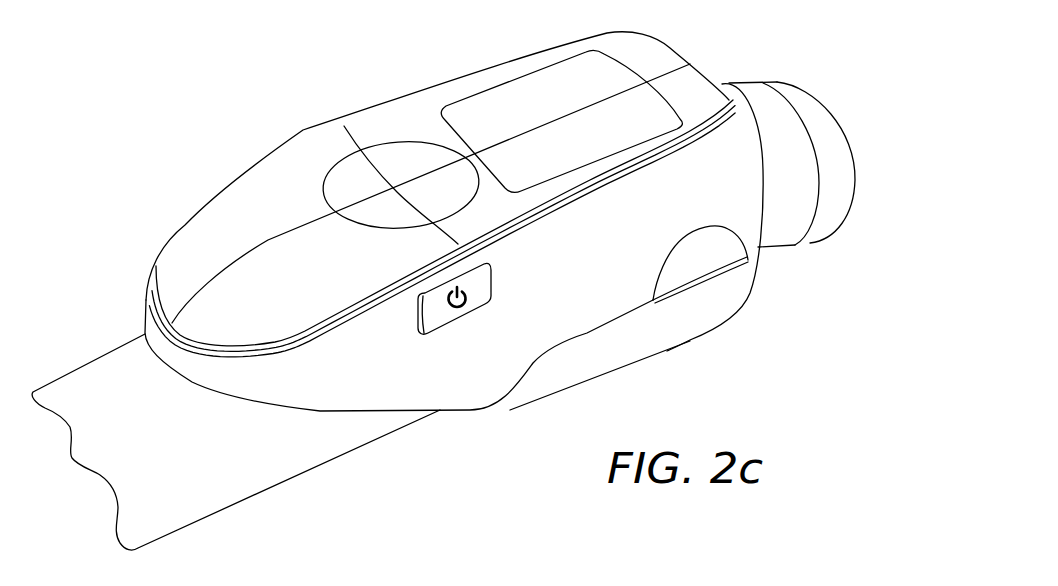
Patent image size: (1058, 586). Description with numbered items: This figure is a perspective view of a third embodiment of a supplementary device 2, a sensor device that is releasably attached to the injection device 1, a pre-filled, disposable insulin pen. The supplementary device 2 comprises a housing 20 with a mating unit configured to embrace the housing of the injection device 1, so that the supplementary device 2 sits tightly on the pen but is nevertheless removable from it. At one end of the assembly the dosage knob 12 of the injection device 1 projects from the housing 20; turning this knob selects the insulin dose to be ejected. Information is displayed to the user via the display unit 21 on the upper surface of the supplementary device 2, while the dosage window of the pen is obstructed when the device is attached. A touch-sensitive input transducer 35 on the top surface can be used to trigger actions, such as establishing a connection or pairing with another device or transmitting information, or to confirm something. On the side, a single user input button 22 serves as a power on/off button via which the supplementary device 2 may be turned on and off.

The injection device 1 is at (96, 353).
The supplementary device 2 is at (304, 129).
The dosage knob 12 is at (788, 88).
The housing 20 is at (743, 197).
The display unit 21 is at (472, 108).
The user input button 22 is at (467, 305).
The touch-sensitive input transducer 35 is at (389, 152).